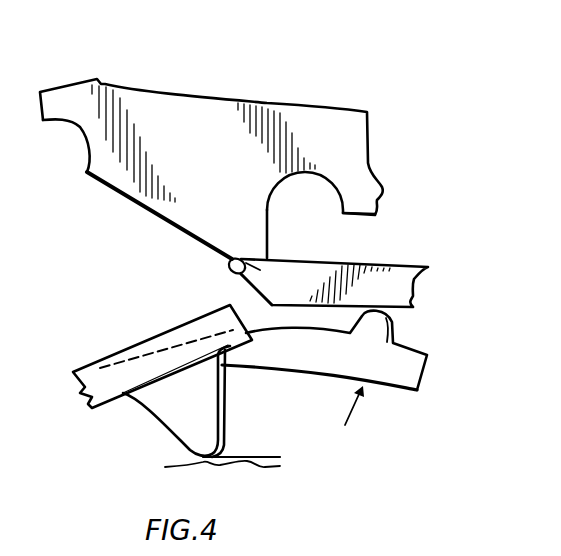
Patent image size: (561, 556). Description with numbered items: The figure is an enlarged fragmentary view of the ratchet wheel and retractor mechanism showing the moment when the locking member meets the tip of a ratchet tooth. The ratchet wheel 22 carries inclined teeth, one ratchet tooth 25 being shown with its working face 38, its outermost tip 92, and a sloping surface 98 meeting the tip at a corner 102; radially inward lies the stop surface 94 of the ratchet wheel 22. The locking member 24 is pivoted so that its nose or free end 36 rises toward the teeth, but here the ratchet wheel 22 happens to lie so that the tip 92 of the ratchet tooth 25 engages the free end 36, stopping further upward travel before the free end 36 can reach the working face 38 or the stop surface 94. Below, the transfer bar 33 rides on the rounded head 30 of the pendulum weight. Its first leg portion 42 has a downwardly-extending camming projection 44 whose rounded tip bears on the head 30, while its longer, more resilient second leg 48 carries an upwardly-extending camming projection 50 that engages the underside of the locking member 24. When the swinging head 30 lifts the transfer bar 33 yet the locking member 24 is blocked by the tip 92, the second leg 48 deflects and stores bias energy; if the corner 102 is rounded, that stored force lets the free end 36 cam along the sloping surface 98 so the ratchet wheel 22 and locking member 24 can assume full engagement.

The ratchet wheel 22 is at (233, 46).
The radially inner stop surface 94 is at (93, 185).
The ratchet tooth 25 is at (120, 203).
The sloping surface 98 is at (189, 242).
The corner 102 is at (240, 255).
The tip 92 is at (229, 262).
The working face 38 is at (268, 237).
The locking member 24 is at (427, 266).
The free end 36 is at (232, 282).
The transfer bar 33 is at (98, 353).
The first leg portion 42 is at (127, 370).
The camming projection 44 is at (185, 414).
The head 30 is at (240, 464).
The second leg 48 is at (287, 346).
The camming projection 50 is at (377, 326).